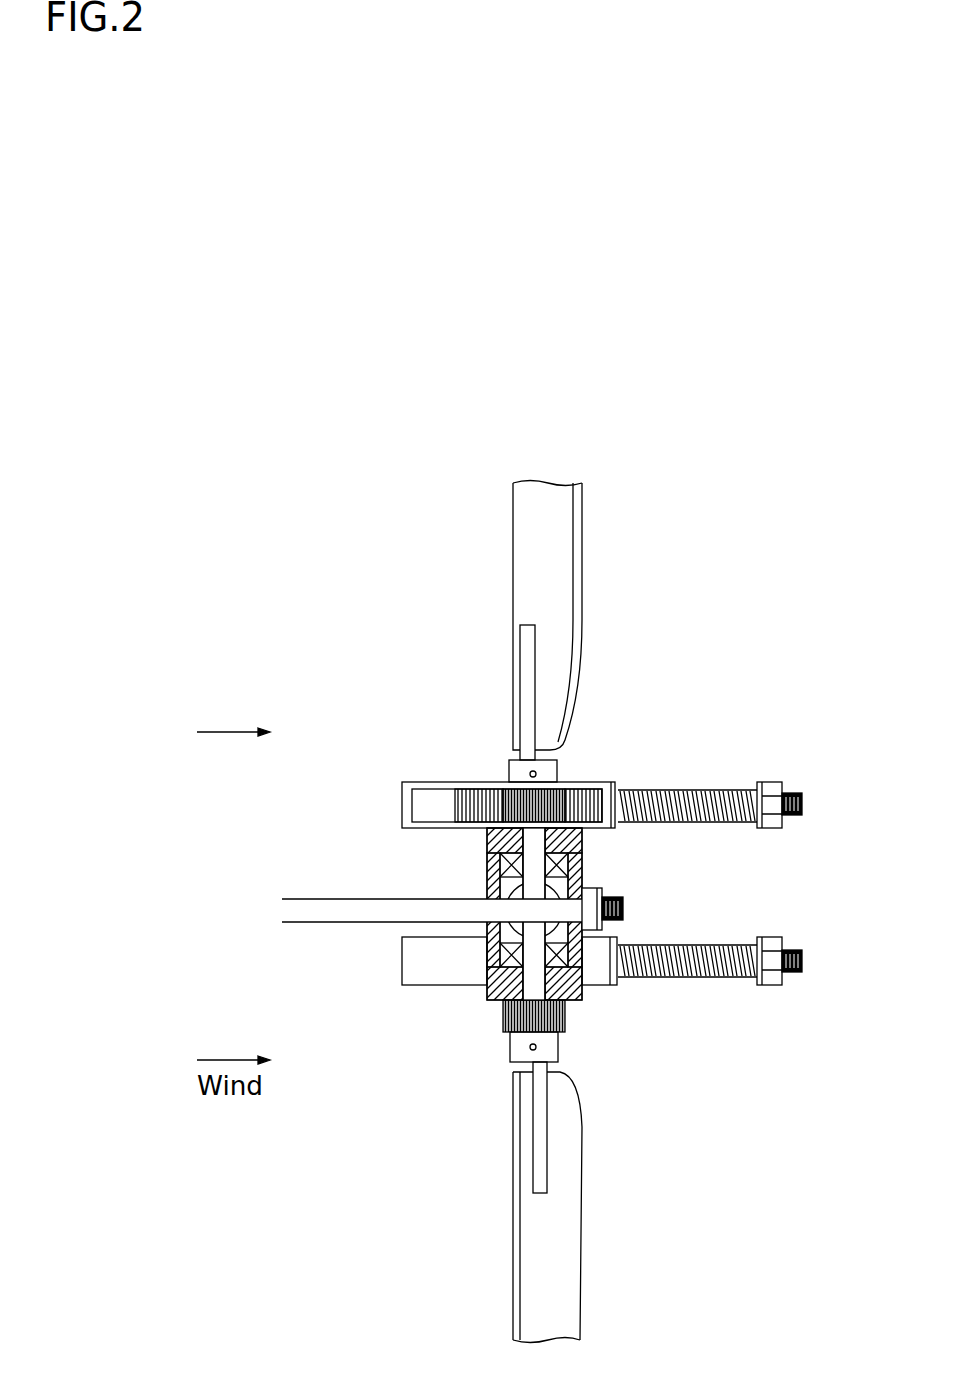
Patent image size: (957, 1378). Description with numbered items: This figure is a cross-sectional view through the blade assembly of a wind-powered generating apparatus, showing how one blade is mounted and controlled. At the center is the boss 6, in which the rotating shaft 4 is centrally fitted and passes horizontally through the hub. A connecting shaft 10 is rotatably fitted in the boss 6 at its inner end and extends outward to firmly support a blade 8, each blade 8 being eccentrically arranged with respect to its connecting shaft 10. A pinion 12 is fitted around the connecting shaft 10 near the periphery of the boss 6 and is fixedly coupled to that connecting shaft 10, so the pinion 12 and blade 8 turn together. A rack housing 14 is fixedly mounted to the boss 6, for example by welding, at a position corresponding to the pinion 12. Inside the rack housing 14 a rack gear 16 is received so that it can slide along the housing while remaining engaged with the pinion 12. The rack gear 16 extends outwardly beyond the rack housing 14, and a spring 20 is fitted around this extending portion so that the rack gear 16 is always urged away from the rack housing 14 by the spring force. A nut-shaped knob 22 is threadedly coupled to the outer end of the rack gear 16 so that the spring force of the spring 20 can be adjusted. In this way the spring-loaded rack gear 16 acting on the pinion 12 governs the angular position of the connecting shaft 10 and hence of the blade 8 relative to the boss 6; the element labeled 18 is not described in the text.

The rotating shaft 4 is at (315, 915).
The boss 6 is at (487, 862).
The blade 8 is at (563, 545).
The connecting shaft 10 is at (520, 641).
The pinion 12 is at (563, 787).
The rack housing 14 is at (425, 980).
The rack gear 16 is at (463, 789).
The coil spring 18 is at (735, 822).
The spring 20 is at (703, 790).
The nut-shaped knob 22 is at (402, 806).